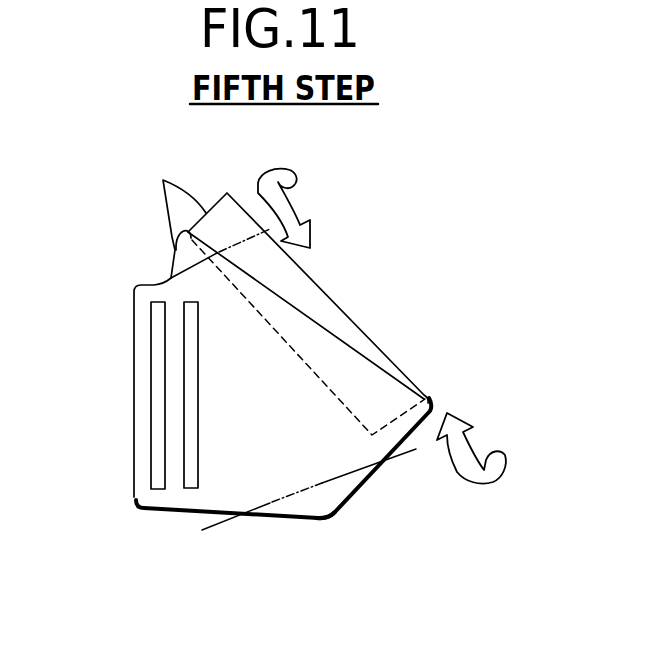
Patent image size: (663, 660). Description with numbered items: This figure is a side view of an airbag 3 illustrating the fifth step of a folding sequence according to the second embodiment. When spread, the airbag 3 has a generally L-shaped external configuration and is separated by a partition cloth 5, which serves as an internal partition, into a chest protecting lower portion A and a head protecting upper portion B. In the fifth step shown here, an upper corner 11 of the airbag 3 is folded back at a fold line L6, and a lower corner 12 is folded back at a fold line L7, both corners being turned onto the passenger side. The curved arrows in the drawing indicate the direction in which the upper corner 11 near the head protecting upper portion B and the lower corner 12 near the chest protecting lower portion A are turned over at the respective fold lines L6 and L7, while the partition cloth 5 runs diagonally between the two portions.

The airbag 3 is at (440, 357).
The partition cloth 5 is at (318, 323).
The upper corner 11 is at (163, 180).
The lower corner 12 is at (323, 514).
The chest protecting lower portion A is at (350, 447).
The head protecting upper portion B is at (302, 292).
The fold line L6 is at (177, 254).
The fold line L7 is at (272, 503).